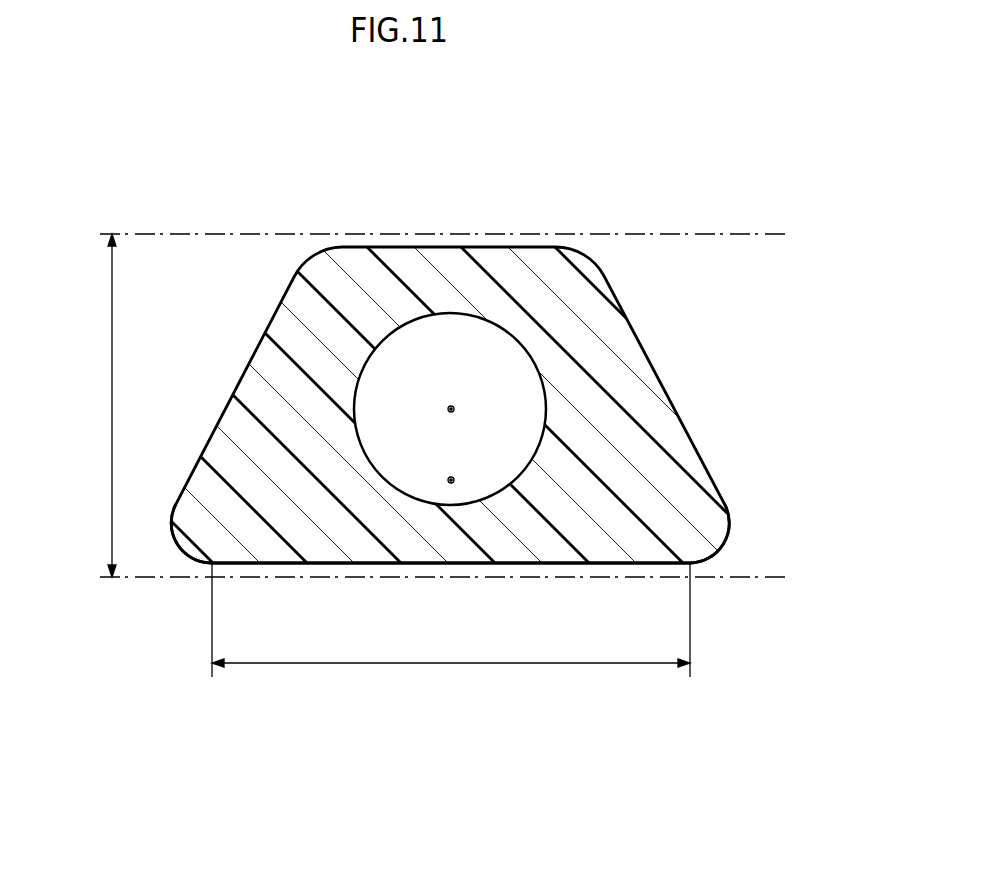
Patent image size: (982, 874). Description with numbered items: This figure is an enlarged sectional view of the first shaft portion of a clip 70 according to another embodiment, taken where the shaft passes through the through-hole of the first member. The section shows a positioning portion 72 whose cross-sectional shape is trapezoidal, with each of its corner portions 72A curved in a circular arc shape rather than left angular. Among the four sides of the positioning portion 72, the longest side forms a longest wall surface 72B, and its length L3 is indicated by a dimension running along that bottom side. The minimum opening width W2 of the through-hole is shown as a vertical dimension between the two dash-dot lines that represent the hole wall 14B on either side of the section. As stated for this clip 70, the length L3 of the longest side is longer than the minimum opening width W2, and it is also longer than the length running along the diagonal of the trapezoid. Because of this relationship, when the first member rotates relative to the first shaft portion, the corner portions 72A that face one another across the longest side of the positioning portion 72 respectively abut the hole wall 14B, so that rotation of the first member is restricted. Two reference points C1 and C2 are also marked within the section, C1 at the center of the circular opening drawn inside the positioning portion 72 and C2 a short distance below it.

The hole wall 14B is at (688, 234).
The clip 70 is at (486, 420).
The positioning portion 72 is at (683, 398).
The corner portions 72A is at (183, 552).
The longest wall surface 72B is at (537, 563).
The center of circular hole C1 is at (454, 407).
The center of gravity C2 is at (450, 483).
The minimum opening width W2 is at (112, 397).
The length of the longest side L3 is at (447, 663).